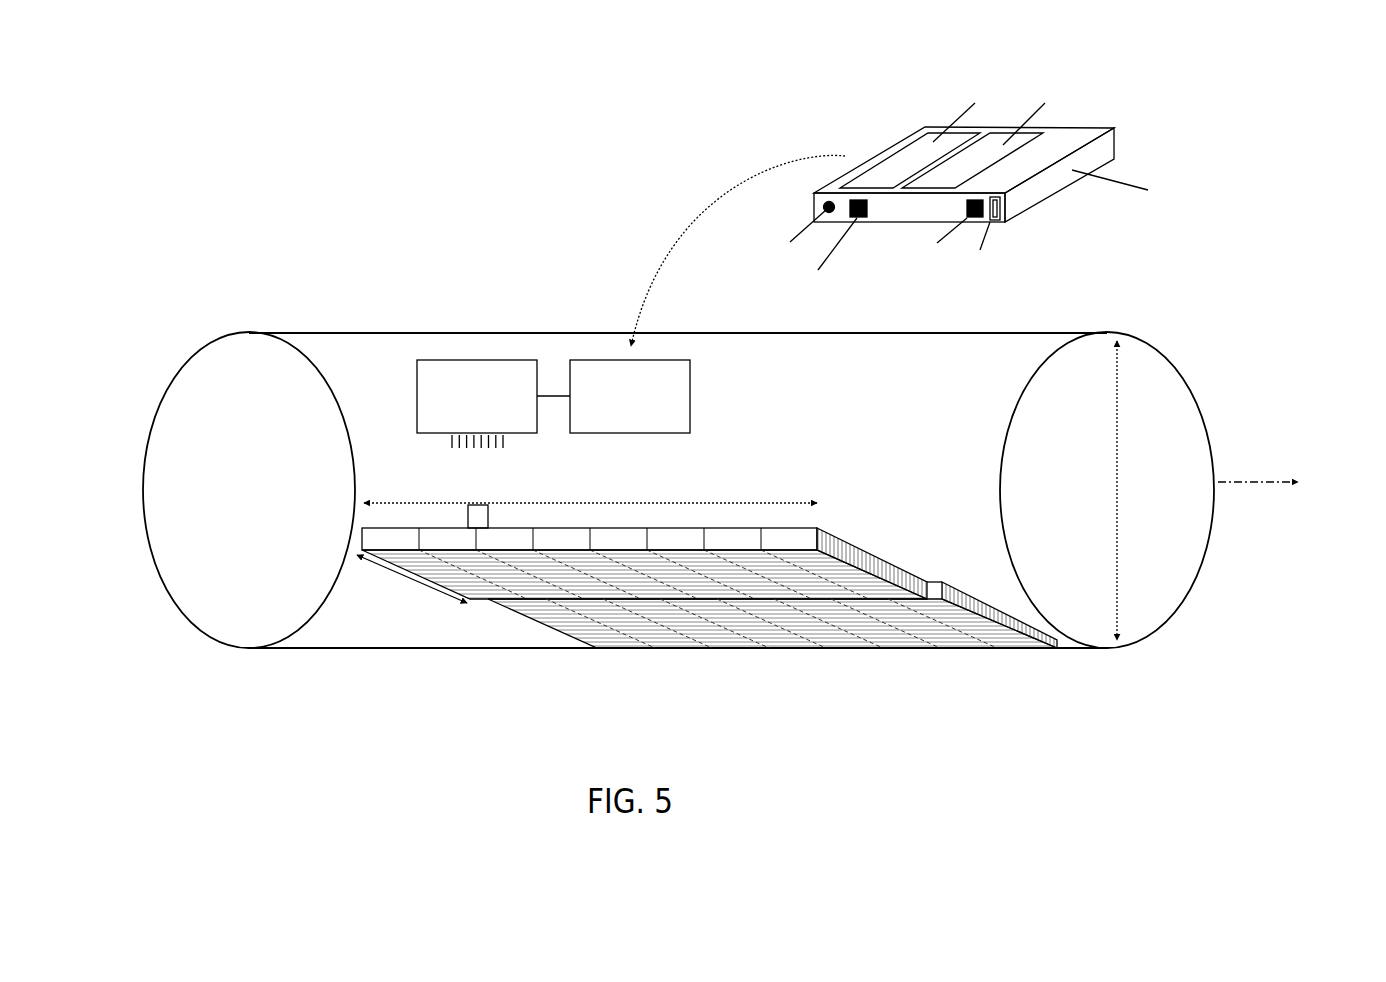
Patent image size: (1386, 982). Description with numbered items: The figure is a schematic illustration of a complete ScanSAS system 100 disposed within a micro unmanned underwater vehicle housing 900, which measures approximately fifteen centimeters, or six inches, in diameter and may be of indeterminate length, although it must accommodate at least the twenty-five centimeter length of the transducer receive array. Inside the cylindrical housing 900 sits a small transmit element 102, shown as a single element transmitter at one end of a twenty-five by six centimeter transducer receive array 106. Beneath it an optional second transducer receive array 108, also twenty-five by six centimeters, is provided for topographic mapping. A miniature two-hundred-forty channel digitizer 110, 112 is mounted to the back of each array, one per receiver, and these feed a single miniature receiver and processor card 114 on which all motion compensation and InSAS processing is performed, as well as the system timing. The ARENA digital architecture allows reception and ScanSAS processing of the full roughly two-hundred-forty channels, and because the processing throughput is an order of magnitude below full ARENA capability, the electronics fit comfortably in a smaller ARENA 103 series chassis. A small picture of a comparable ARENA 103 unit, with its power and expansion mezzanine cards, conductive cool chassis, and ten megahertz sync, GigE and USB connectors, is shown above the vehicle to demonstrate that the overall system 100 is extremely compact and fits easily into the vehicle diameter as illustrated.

The ScanSAS system 100 is at (355, 676).
The μUUV housing 900 is at (337, 333).
The transmit element 102 is at (478, 513).
The transducer receive array 106 is at (677, 572).
The second transducer receive array 108 is at (980, 623).
The 240 channel digitizer 110 is at (478, 362).
The 240 channel digitizer 112 is at (477, 404).
The receiver and processor card 114 is at (593, 362).
The ARENA 103 series chassis 103 is at (1062, 145).